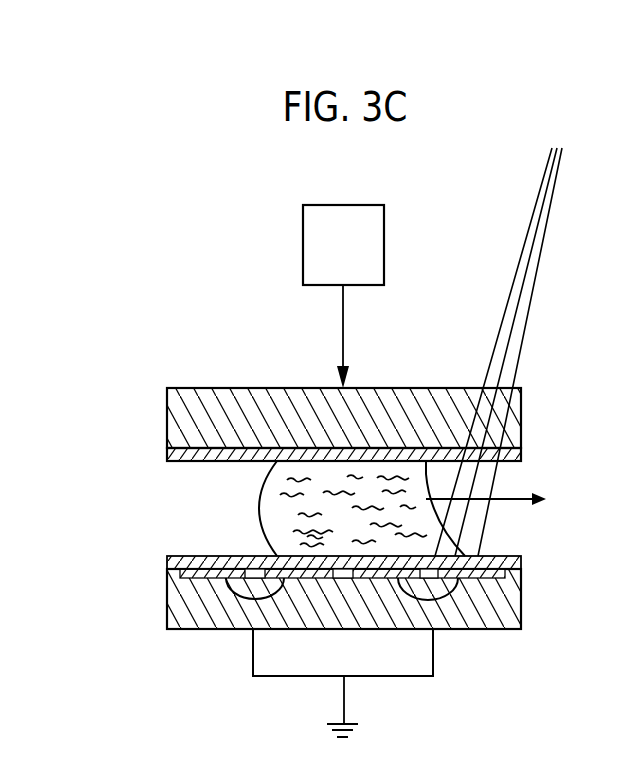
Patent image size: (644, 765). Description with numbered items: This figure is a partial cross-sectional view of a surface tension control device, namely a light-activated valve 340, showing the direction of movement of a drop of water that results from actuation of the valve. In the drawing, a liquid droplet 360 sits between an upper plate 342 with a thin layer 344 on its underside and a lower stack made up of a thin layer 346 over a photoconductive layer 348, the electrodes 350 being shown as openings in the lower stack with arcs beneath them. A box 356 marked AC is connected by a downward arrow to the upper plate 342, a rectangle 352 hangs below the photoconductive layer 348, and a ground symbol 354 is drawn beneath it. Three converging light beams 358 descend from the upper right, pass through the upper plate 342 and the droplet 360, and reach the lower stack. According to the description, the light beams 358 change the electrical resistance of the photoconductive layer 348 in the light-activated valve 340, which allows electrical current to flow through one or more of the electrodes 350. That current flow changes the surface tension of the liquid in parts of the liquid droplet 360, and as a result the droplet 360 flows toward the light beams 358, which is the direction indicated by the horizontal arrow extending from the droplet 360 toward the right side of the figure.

The light-activated valve 340 is at (276, 235).
The upper plate 342 is at (167, 405).
The upper hydrophobic layer 344 is at (180, 462).
The lower dielectric layer 346 is at (182, 562).
The photoconductive layer 348 is at (167, 612).
The electrodes 350 is at (247, 599).
The ground connection 352 is at (277, 678).
The ground 354 is at (344, 705).
The AC voltage source 356 is at (384, 237).
The light beams 358 is at (518, 318).
The liquid droplet 360 is at (277, 512).